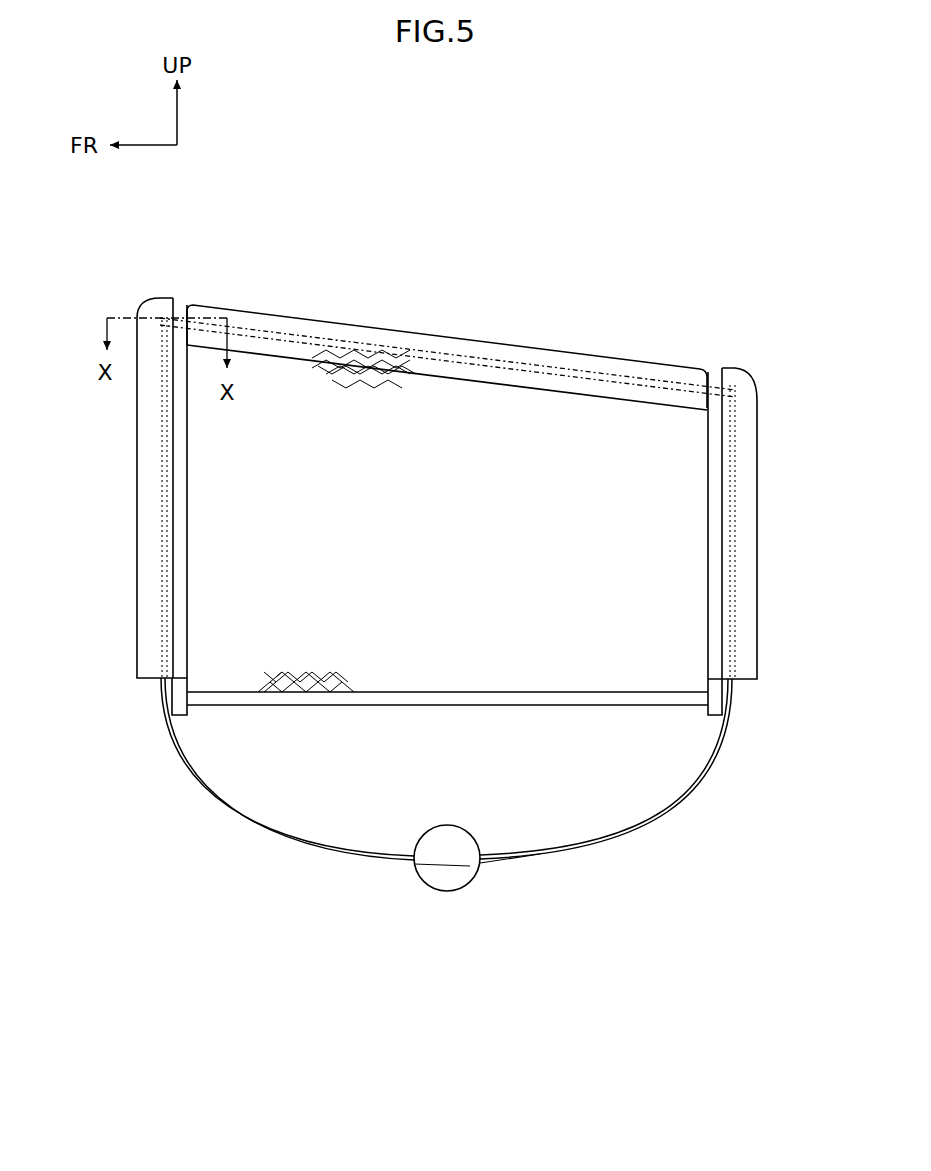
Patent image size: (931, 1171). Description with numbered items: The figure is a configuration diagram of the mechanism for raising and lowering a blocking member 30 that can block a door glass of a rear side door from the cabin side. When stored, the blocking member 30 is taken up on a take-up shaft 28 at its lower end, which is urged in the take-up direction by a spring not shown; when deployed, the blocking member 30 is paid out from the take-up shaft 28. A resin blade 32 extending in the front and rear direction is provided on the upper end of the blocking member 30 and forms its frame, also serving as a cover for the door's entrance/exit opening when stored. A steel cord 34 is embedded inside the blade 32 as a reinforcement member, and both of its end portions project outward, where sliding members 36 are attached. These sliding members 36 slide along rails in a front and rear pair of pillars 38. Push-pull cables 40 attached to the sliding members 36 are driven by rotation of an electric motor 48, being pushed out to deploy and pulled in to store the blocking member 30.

The take-up shaft 28 is at (466, 706).
The blocking member 30 is at (599, 418).
The blade 32 is at (358, 318).
The steel cord 34 is at (485, 342).
The sliding members 36 is at (162, 298).
The pillars 38 is at (137, 545).
The push-pull cables 40 is at (282, 834).
The electric motor 48 is at (447, 892).